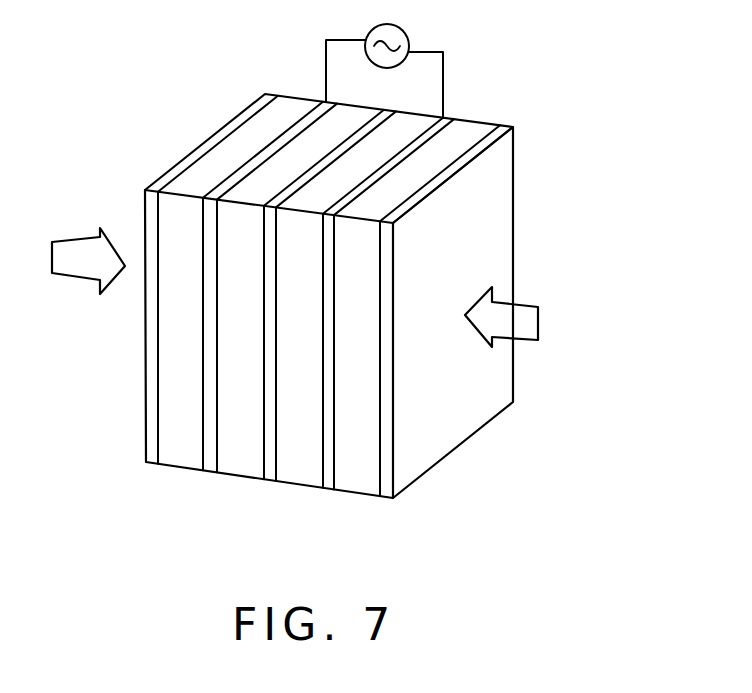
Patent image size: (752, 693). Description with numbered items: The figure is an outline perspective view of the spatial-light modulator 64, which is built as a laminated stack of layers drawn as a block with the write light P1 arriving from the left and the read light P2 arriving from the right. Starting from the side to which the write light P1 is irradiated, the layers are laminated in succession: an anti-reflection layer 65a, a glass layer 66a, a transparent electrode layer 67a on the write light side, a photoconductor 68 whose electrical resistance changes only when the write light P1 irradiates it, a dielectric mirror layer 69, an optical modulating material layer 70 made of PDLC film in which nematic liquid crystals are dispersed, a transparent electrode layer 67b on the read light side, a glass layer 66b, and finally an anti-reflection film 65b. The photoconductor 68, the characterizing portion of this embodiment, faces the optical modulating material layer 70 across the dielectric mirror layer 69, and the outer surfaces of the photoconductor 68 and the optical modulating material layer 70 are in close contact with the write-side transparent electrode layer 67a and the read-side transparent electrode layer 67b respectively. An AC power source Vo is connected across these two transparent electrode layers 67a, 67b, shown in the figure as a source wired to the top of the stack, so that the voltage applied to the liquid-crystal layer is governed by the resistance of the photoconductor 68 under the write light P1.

The spatial-light modulator 64 is at (519, 444).
The anti-reflection layer 65a is at (150, 453).
The anti-reflection film 65b is at (410, 470).
The glass layer 66a is at (167, 467).
The glass layer 66b is at (353, 486).
The transparent electrode layer on the write light side 67a is at (210, 465).
The transparent electrode layer on the read light side 67b is at (328, 486).
The photoconductor 68 is at (233, 468).
The dielectric mirror layer 69 is at (270, 472).
The optical modulating material layer 70 is at (293, 478).
The AC power source Vo is at (405, 32).
The write light P1 is at (70, 253).
The output light beam P2 is at (525, 310).